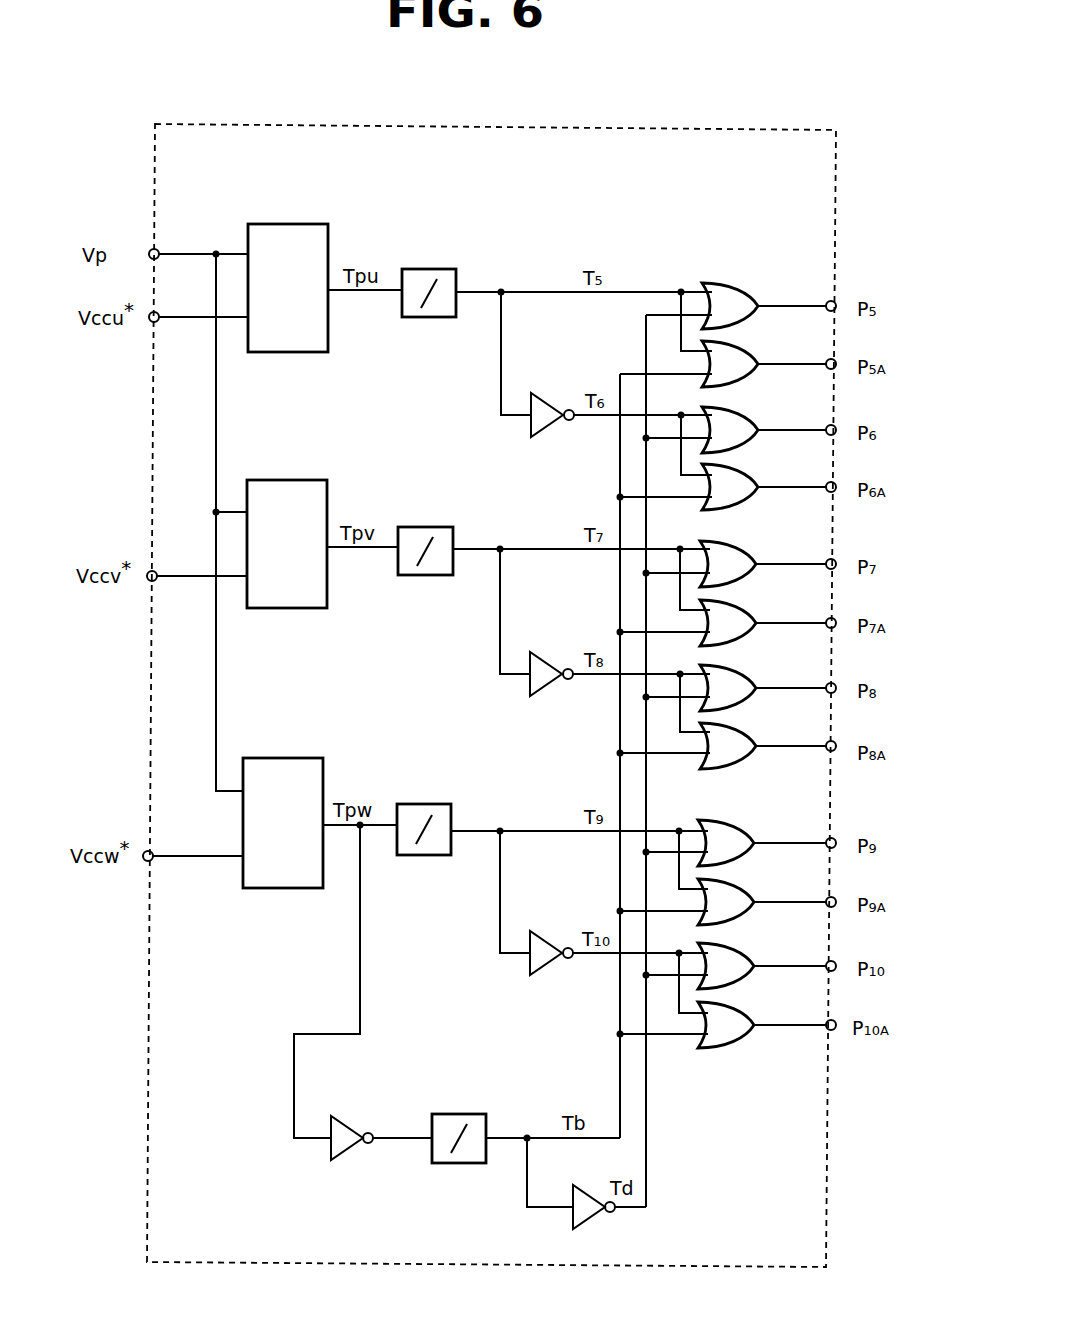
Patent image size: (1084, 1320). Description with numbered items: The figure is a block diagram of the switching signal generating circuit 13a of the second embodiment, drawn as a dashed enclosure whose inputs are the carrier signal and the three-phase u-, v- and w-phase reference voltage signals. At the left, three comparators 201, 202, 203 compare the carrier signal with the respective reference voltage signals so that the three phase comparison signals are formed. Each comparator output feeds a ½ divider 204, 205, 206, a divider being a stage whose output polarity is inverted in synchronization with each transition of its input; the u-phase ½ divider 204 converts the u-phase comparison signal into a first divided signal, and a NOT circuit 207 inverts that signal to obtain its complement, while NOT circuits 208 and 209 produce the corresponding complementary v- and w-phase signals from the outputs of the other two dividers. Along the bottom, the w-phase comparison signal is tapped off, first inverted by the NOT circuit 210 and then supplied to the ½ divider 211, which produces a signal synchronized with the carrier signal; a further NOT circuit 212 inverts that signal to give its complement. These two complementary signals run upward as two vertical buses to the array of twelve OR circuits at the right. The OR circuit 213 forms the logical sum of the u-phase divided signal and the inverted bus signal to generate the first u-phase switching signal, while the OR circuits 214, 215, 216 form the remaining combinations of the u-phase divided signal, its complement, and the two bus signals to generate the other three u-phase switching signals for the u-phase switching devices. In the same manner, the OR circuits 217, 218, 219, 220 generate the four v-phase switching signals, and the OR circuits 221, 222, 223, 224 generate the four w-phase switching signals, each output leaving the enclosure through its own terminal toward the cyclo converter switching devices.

The switching signal generating circuit 13a is at (684, 92).
The comparator 201 is at (284, 224).
The comparator 202 is at (284, 480).
The comparator 203 is at (282, 758).
The ½ divider 204 is at (421, 268).
The ½ divider 205 is at (420, 526).
The ½ divider 206 is at (418, 803).
The NOT circuit 207 is at (552, 400).
The NOT circuit 208 is at (548, 660).
The NOT circuit 209 is at (548, 939).
The NOT circuit 210 is at (348, 1120).
The ½ divider 211 is at (450, 1113).
The NOT circuit 212 is at (590, 1220).
The OR circuit 213 is at (748, 291).
The OR circuit 214 is at (748, 349).
The OR circuit 215 is at (748, 415).
The OR circuit 216 is at (748, 472).
The OR circuit 217 is at (746, 549).
The OR circuit 218 is at (746, 608).
The OR circuit 219 is at (746, 673).
The OR circuit 220 is at (746, 731).
The OR circuit 221 is at (744, 828).
The OR circuit 222 is at (744, 887).
The OR circuit 223 is at (744, 951).
The OR circuit 224 is at (744, 1010).